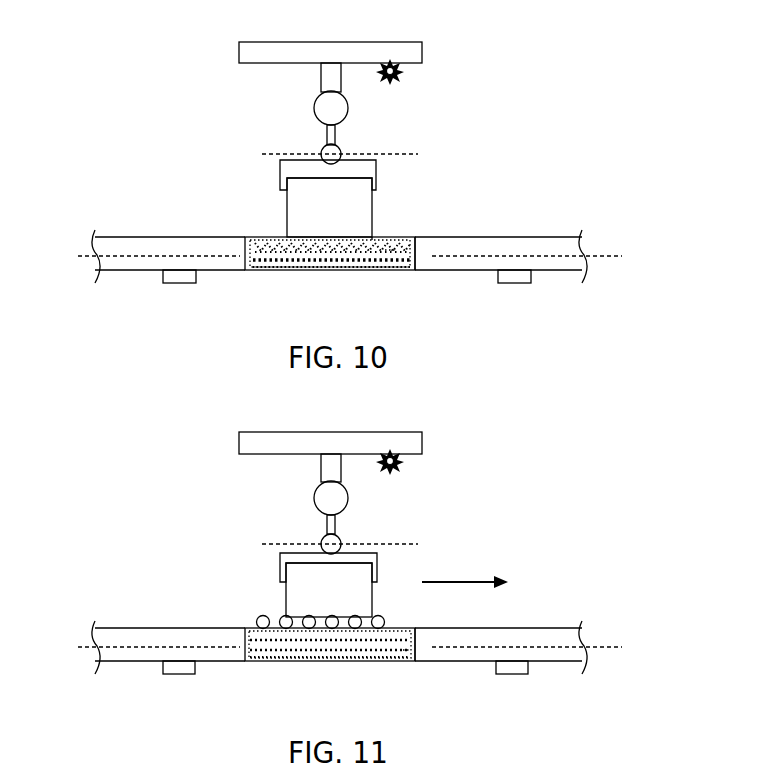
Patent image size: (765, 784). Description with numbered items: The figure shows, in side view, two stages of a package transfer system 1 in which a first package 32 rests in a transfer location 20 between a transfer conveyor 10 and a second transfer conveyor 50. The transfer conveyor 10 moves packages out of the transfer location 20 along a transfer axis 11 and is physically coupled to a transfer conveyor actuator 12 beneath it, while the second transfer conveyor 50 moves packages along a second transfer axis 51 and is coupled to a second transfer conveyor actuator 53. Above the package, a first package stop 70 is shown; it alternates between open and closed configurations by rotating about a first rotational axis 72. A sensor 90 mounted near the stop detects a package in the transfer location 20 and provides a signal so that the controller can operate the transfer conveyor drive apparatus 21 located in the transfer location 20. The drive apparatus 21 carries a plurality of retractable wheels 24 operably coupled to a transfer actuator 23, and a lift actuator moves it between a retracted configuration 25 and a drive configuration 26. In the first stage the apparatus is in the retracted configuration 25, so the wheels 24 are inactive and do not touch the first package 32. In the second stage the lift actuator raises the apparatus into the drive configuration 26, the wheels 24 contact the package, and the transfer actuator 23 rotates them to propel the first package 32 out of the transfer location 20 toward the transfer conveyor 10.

In FIG. 10, the package transfer system 1 is at (217, 102).
In FIG. 11, the package transfer system 1 is at (214, 462).
In FIG. 10, the transfer conveyor 10 is at (538, 237).
In FIG. 11, the transfer conveyor 10 is at (537, 628).
In FIG. 10, the transfer axis 11 is at (539, 255).
In FIG. 11, the transfer axis 11 is at (539, 646).
In FIG. 10, the transfer conveyor actuator 12 is at (515, 283).
In FIG. 11, the transfer conveyor actuator 12 is at (511, 674).
In FIG. 10, the transfer location 20 is at (263, 237).
In FIG. 11, the transfer location 20 is at (250, 628).
In FIG. 10, the transfer conveyor drive apparatus 21 is at (411, 279).
In FIG. 11, the transfer conveyor drive apparatus 21 is at (399, 670).
In FIG. 10, the transfer actuator 23 is at (390, 250).
In FIG. 11, the transfer actuator 23 is at (407, 650).
In FIG. 10, the retractable wheels 24 is at (377, 240).
In FIG. 11, the retractable wheels 24 is at (381, 615).
In FIG. 10, the retracted configuration 25 is at (237, 211).
In FIG. 11, the retracted configuration 25 is at (330, 663).
In FIG. 11, the drive configuration 26 is at (270, 578).
In FIG. 10, the first package 32 is at (287, 212).
In FIG. 11, the first package 32 is at (315, 589).
In FIG. 10, the second transfer conveyor 50 is at (150, 237).
In FIG. 11, the second transfer conveyor 50 is at (148, 628).
In FIG. 10, the second transfer axis 51 is at (145, 255).
In FIG. 11, the second transfer axis 51 is at (145, 646).
In FIG. 10, the second transfer conveyor actuator 53 is at (181, 283).
In FIG. 11, the second transfer conveyor actuator 53 is at (178, 674).
In FIG. 10, the first package stop 70 is at (312, 160).
In FIG. 11, the first package stop 70 is at (312, 553).
In FIG. 10, the first rotational axis 72 is at (353, 153).
In FIG. 11, the first rotational axis 72 is at (353, 544).
In FIG. 10, the sensor 90 is at (398, 78).
In FIG. 11, the sensor 90 is at (398, 468).